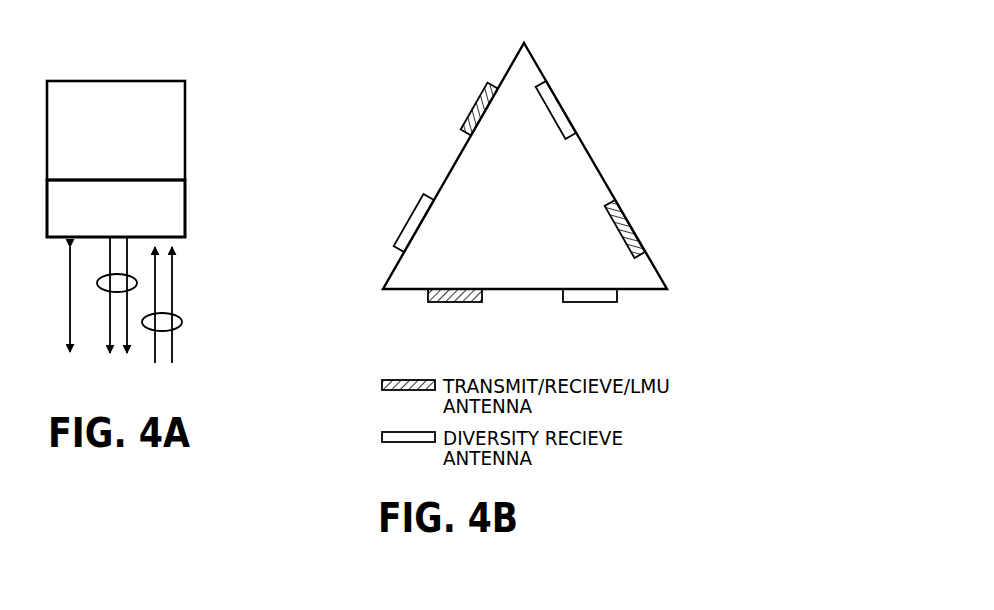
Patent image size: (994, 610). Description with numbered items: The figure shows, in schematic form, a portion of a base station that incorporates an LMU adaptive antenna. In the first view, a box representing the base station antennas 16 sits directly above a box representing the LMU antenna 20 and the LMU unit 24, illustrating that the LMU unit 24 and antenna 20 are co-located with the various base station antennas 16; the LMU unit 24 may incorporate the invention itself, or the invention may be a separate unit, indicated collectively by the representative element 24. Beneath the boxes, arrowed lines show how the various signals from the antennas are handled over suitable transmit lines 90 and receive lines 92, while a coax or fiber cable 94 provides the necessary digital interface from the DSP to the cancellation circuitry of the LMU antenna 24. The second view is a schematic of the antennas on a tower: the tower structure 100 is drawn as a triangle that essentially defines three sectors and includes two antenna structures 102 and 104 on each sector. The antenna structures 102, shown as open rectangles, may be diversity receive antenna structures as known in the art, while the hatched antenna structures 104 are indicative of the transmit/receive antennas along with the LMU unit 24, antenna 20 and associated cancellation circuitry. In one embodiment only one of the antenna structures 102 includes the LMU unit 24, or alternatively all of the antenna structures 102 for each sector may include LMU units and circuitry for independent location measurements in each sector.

In FIG. 4A, the base station antennas 16 is at (185, 110).
In FIG. 4B, the base station antennas 16 is at (630, 76).
In FIG. 4A, the LMU antenna 20 is at (185, 206).
In FIG. 4A, the LMU unit 24 is at (116, 208).
In FIG. 4A, the transmit lines 90 is at (182, 322).
In FIG. 4A, the receive lines 92 is at (137, 283).
In FIG. 4A, the coax or fiber cable 94 is at (70, 306).
In FIG. 4B, the tower structure 100 is at (598, 167).
In FIG. 4B, the diversity receive antenna structures 102 is at (575, 110).
In FIG. 4B, the transmit/receive antenna structures 104 is at (473, 108).